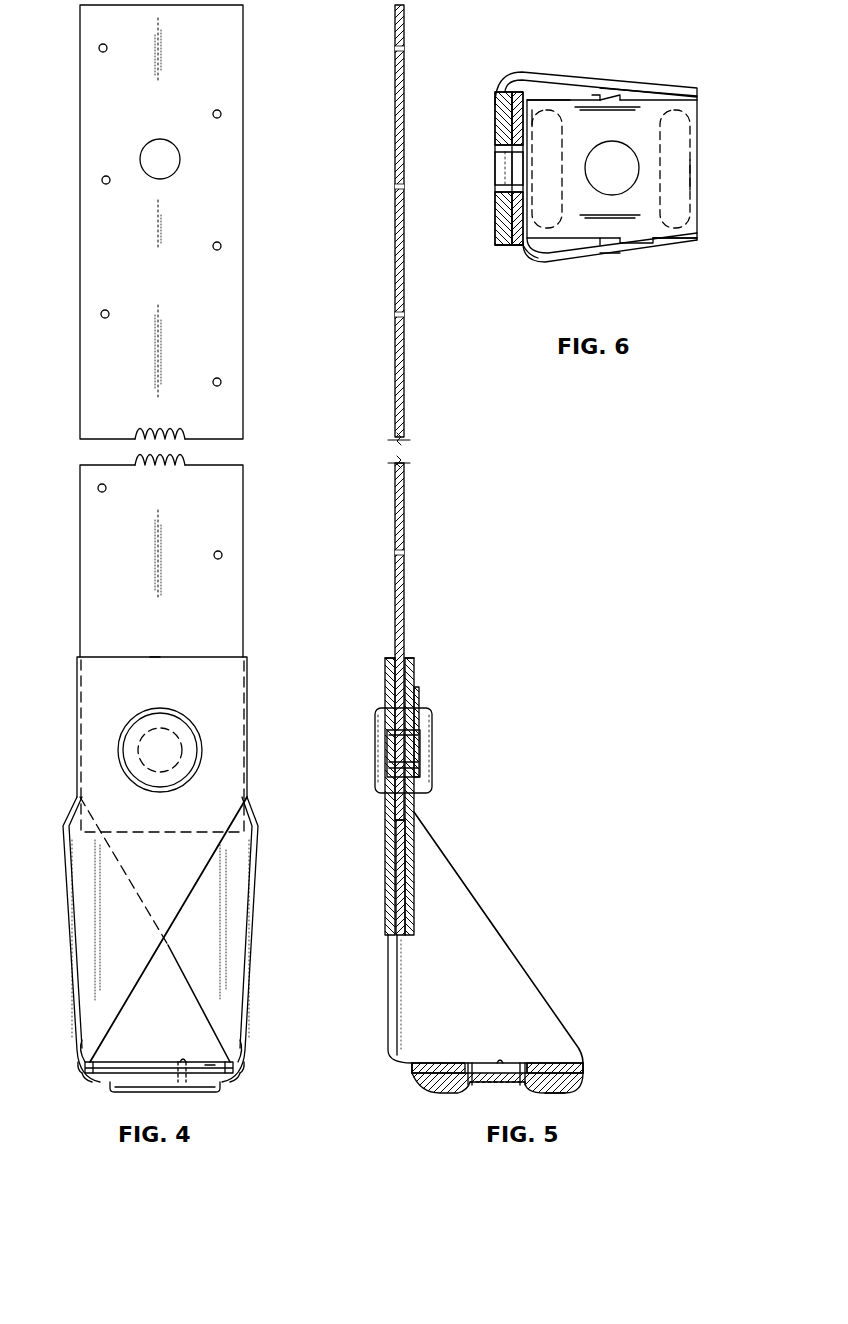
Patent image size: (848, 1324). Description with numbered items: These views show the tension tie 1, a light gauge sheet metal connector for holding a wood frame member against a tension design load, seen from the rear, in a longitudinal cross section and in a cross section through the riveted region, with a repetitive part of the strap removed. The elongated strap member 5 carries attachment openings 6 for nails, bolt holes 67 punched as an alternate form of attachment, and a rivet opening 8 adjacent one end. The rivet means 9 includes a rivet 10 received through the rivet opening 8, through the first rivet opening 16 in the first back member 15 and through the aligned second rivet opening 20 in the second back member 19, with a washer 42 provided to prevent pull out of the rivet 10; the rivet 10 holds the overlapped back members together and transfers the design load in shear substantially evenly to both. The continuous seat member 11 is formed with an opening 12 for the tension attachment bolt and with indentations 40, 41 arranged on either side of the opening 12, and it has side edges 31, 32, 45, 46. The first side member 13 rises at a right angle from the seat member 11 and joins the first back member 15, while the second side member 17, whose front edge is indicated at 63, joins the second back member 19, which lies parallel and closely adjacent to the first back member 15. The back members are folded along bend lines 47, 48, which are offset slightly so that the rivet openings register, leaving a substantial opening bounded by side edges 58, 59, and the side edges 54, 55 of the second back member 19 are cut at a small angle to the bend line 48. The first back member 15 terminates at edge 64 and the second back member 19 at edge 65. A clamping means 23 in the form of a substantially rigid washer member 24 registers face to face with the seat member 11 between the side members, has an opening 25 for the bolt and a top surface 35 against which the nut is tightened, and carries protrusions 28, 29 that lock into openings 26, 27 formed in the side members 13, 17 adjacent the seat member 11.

In FIG. 4, the tension tie 1 is at (250, 649).
In FIG. 4, the elongated strap member 5 is at (231, 66).
In FIG. 5, the elongated strap member 5 is at (402, 487).
In FIG. 6, the elongated strap member 5 is at (499, 127).
In FIG. 4, the attachment openings 6 is at (213, 113).
In FIG. 5, the attachment openings 6 is at (395, 48).
In FIG. 6, the rivet opening 8 is at (497, 183).
In FIG. 5, the rivet means 9 is at (434, 712).
In FIG. 4, the rivet 10 is at (173, 724).
In FIG. 5, the rivet 10 is at (378, 736).
In FIG. 5, the continuous seat member 11 is at (470, 1063).
In FIG. 4, the opening 12 is at (182, 1081).
In FIG. 5, the opening 12 is at (515, 1080).
In FIG. 6, the first side member 13 is at (675, 250).
In FIG. 4, the first back member 15 is at (163, 929).
In FIG. 5, the first back member 15 is at (415, 861).
In FIG. 6, the first back member 15 is at (514, 249).
In FIG. 6, the first rivet opening 16 is at (513, 186).
In FIG. 5, the second side member 17 is at (427, 999).
In FIG. 6, the second side member 17 is at (648, 85).
In FIG. 4, the second back member 19 is at (98, 691).
In FIG. 5, the second back member 19 is at (386, 830).
In FIG. 6, the second back member 19 is at (497, 91).
In FIG. 6, the second rivet opening 20 is at (498, 191).
In FIG. 4, the clamping means 23 is at (119, 1059).
In FIG. 6, the clamping means 23 is at (656, 252).
In FIG. 4, the rigid washer member 24 is at (128, 1062).
In FIG. 5, the rigid washer member 24 is at (545, 1063).
In FIG. 6, the rigid washer member 24 is at (641, 232).
In FIG. 4, the opening 25 is at (185, 1064).
In FIG. 5, the opening 25 is at (525, 1068).
In FIG. 6, the opening 25 is at (617, 148).
In FIG. 4, the opening 26 is at (243, 1052).
In FIG. 6, the opening 26 is at (600, 262).
In FIG. 4, the opening 27 is at (85, 1043).
In FIG. 6, the opening 27 is at (626, 86).
In FIG. 4, the protrusion 28 is at (248, 1073).
In FIG. 6, the protrusion 28 is at (600, 246).
In FIG. 4, the protrusion 29 is at (80, 1070).
In FIG. 6, the protrusion 29 is at (598, 96).
In FIG. 4, the side edge 31 is at (240, 1076).
In FIG. 6, the side edge 31 is at (545, 248).
In FIG. 4, the side edge 32 is at (88, 1076).
In FIG. 6, the side edge 32 is at (571, 100).
In FIG. 5, the top surface 35 is at (432, 1063).
In FIG. 6, the top surface 35 is at (605, 125).
In FIG. 5, the indentation 40 is at (575, 1093).
In FIG. 6, the indentation 40 is at (663, 100).
In FIG. 4, the indentation 41 is at (115, 1094).
In FIG. 5, the indentation 41 is at (448, 1093).
In FIG. 6, the indentation 41 is at (554, 108).
In FIG. 5, the washer 42 is at (418, 695).
In FIG. 5, the side edge 45 is at (585, 1070).
In FIG. 6, the side edge 45 is at (698, 166).
In FIG. 4, the side edge 46 is at (210, 1066).
In FIG. 5, the side edge 46 is at (410, 1073).
In FIG. 6, the side edge 46 is at (532, 224).
In FIG. 4, the bend line 47 is at (258, 830).
In FIG. 4, the bend line 48 is at (65, 856).
In FIG. 4, the side edge 54 is at (76, 733).
In FIG. 4, the side edge 55 is at (254, 754).
In FIG. 4, the side edge 58 is at (184, 975).
In FIG. 4, the side edge 59 is at (136, 981).
In FIG. 5, the side edge 59 is at (390, 973).
In FIG. 5, the front edge 63 is at (466, 887).
In FIG. 5, the edge 64 is at (409, 658).
In FIG. 4, the edge 65 is at (152, 648).
In FIG. 5, the edge 65 is at (388, 658).
In FIG. 4, the bolt holes 67 is at (178, 160).